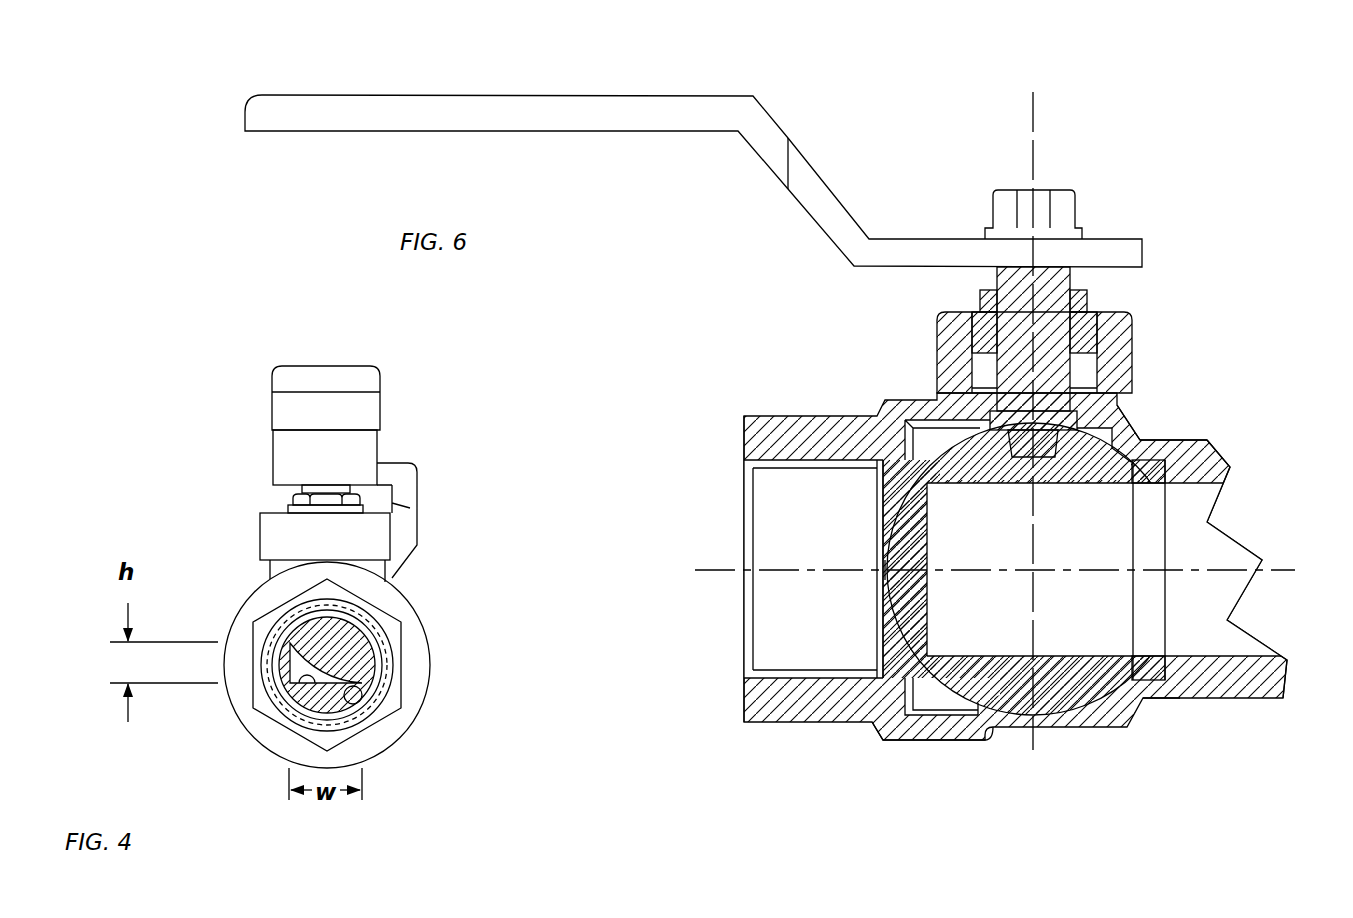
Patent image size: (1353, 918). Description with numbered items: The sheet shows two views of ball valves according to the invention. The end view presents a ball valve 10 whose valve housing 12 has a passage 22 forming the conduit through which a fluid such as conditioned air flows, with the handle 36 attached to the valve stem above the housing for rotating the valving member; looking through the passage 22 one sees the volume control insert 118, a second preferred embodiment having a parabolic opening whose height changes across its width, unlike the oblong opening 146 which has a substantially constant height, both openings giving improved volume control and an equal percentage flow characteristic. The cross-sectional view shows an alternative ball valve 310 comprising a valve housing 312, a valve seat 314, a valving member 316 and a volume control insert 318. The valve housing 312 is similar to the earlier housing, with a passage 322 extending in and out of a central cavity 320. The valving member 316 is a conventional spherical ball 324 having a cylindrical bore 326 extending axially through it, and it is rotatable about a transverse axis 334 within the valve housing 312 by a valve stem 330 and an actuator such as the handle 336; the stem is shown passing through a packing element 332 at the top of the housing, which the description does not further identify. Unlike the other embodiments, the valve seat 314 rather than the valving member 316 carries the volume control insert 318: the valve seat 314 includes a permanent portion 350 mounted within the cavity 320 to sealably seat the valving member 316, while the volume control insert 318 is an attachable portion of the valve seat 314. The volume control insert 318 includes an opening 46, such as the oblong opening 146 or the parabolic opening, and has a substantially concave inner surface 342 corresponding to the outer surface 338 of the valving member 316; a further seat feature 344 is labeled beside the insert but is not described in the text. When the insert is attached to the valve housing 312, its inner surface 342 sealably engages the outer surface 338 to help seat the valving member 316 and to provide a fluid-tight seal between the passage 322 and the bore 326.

In FIG. 4, the ball valve 10 is at (450, 592).
In FIG. 4, the valve housing 12 is at (436, 685).
In FIG. 4, the passage 22 is at (349, 696).
In FIG. 4, the handle 36 is at (380, 386).
In FIG. 6, the opening 46 is at (878, 582).
In FIG. 4, the volume control insert 118 is at (300, 627).
In FIG. 4, the oblong opening 146 is at (289, 684).
In FIG. 6, the ball valve 310 is at (770, 321).
In FIG. 6, the valve housing 312 is at (1218, 432).
In FIG. 6, the valve seat 314 is at (1172, 690).
In FIG. 6, the valving member 316 is at (1084, 616).
In FIG. 6, the volume control insert 318 is at (993, 586).
In FIG. 6, the central cavity 320 is at (1150, 440).
In FIG. 6, the passage 322 is at (828, 565).
In FIG. 6, the spherical ball 324 is at (984, 727).
In FIG. 6, the cylindrical bore 326 is at (1026, 548).
In FIG. 6, the valve stem 330 is at (1075, 280).
In FIG. 6, the packing gland 332 is at (1000, 297).
In FIG. 6, the transverse axis 334 is at (1033, 135).
In FIG. 6, the handle 336 is at (477, 96).
In FIG. 6, the outer surface 338 is at (966, 440).
In FIG. 6, the inner surface 342 is at (915, 506).
In FIG. 6, the seat face 344 is at (880, 602).
In FIG. 6, the permanent portion 350 is at (1153, 683).